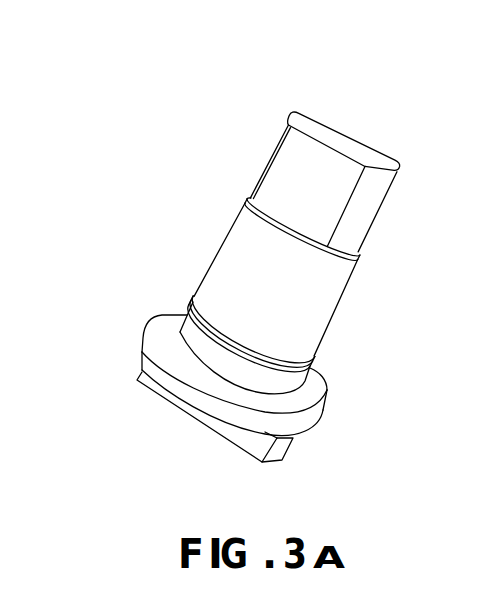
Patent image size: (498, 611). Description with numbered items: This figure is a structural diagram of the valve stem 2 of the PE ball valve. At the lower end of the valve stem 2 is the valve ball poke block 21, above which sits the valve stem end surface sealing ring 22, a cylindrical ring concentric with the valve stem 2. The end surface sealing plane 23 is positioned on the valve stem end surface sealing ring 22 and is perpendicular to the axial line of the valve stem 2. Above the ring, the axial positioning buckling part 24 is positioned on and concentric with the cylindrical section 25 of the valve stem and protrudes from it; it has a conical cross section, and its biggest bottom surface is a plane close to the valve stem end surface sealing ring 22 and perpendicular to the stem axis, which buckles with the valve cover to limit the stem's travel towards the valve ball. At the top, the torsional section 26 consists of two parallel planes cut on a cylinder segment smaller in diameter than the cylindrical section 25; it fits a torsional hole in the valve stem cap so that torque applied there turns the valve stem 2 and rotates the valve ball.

The valve stem 2 is at (317, 327).
The valve ball poke block 21 is at (165, 395).
The valve stem end surface sealing ring 22 is at (153, 347).
The end surface sealing plane 23 is at (170, 318).
The axial positioning buckling part 24 is at (194, 300).
The cylindrical section 25 is at (236, 238).
The torsional section 26 is at (286, 156).